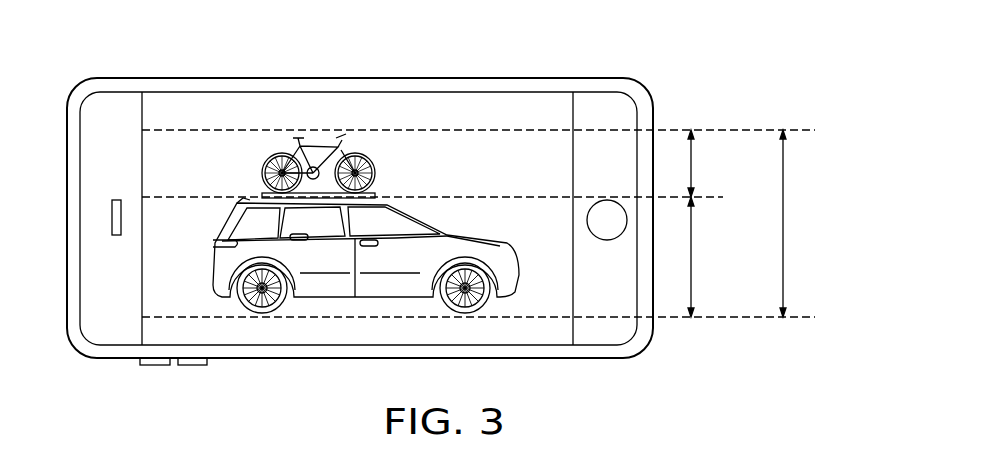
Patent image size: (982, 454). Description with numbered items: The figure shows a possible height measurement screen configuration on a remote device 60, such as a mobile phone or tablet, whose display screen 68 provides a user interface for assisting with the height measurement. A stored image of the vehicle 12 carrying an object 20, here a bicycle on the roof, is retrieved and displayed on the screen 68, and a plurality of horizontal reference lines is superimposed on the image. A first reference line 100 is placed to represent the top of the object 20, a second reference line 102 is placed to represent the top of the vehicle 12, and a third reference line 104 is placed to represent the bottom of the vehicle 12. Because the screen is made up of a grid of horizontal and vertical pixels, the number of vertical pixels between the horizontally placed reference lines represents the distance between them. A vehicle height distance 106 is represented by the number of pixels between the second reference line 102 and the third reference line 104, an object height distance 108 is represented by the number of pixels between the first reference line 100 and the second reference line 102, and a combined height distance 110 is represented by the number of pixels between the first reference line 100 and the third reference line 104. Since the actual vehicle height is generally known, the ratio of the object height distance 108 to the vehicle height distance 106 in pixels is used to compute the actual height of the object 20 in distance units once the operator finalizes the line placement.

The vehicle 12 is at (213, 250).
The object 20 is at (268, 160).
The remote device 60 is at (82, 352).
The display screen 68 is at (394, 102).
The first reference line 100 is at (562, 128).
The second reference line 102 is at (488, 197).
The third reference line 104 is at (562, 316).
The vehicle height distance 106 is at (688, 230).
The object height distance 108 is at (688, 182).
The combined height distance 110 is at (783, 182).